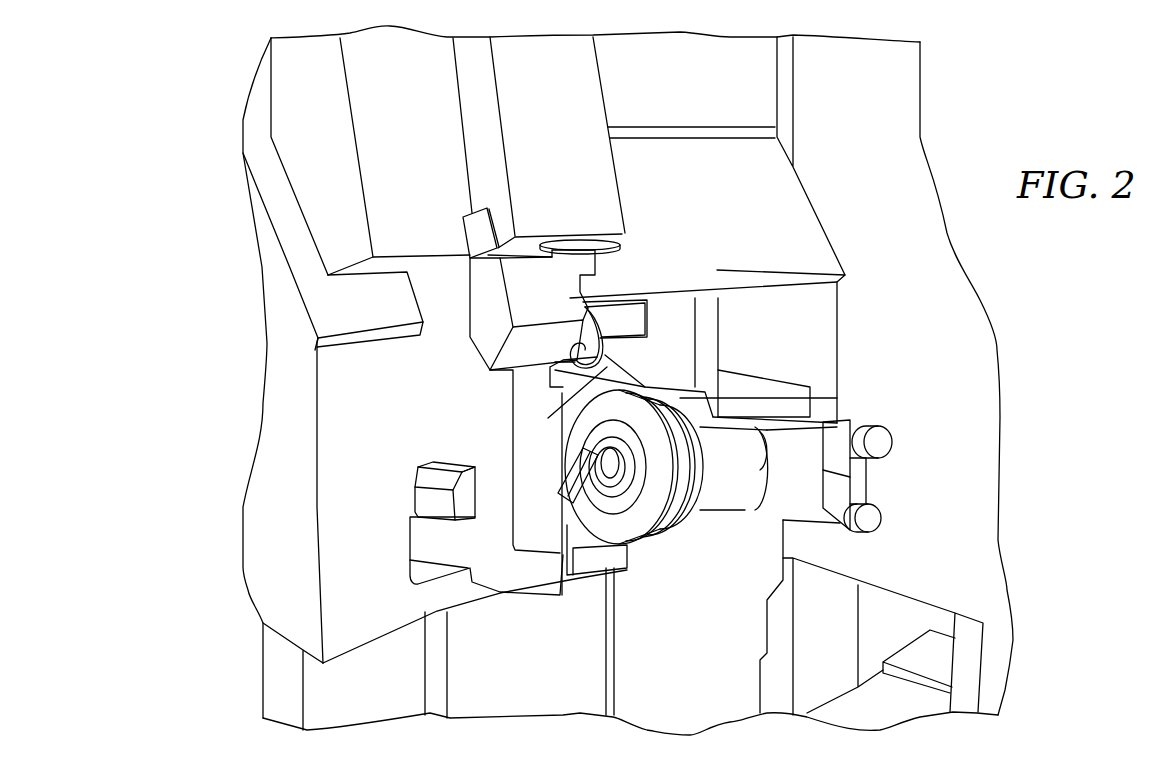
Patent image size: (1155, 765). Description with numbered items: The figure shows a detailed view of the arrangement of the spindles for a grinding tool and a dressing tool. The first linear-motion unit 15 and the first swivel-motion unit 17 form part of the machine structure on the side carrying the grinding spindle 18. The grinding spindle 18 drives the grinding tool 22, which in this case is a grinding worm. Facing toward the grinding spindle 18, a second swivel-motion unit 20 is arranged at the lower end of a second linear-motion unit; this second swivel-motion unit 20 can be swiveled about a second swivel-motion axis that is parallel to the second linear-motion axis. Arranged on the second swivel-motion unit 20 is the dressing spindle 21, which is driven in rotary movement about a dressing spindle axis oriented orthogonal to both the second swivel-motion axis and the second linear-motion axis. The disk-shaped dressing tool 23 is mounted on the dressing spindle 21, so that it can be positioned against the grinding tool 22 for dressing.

The first linear-motion unit 15 is at (267, 425).
The first swivel-motion unit 17 is at (607, 367).
The grinding spindle 18 is at (883, 467).
The second swivel-motion unit 20 is at (570, 297).
The dressing spindle 21 is at (598, 354).
The grinding tool 22 is at (677, 425).
The dressing tool 23 is at (557, 320).